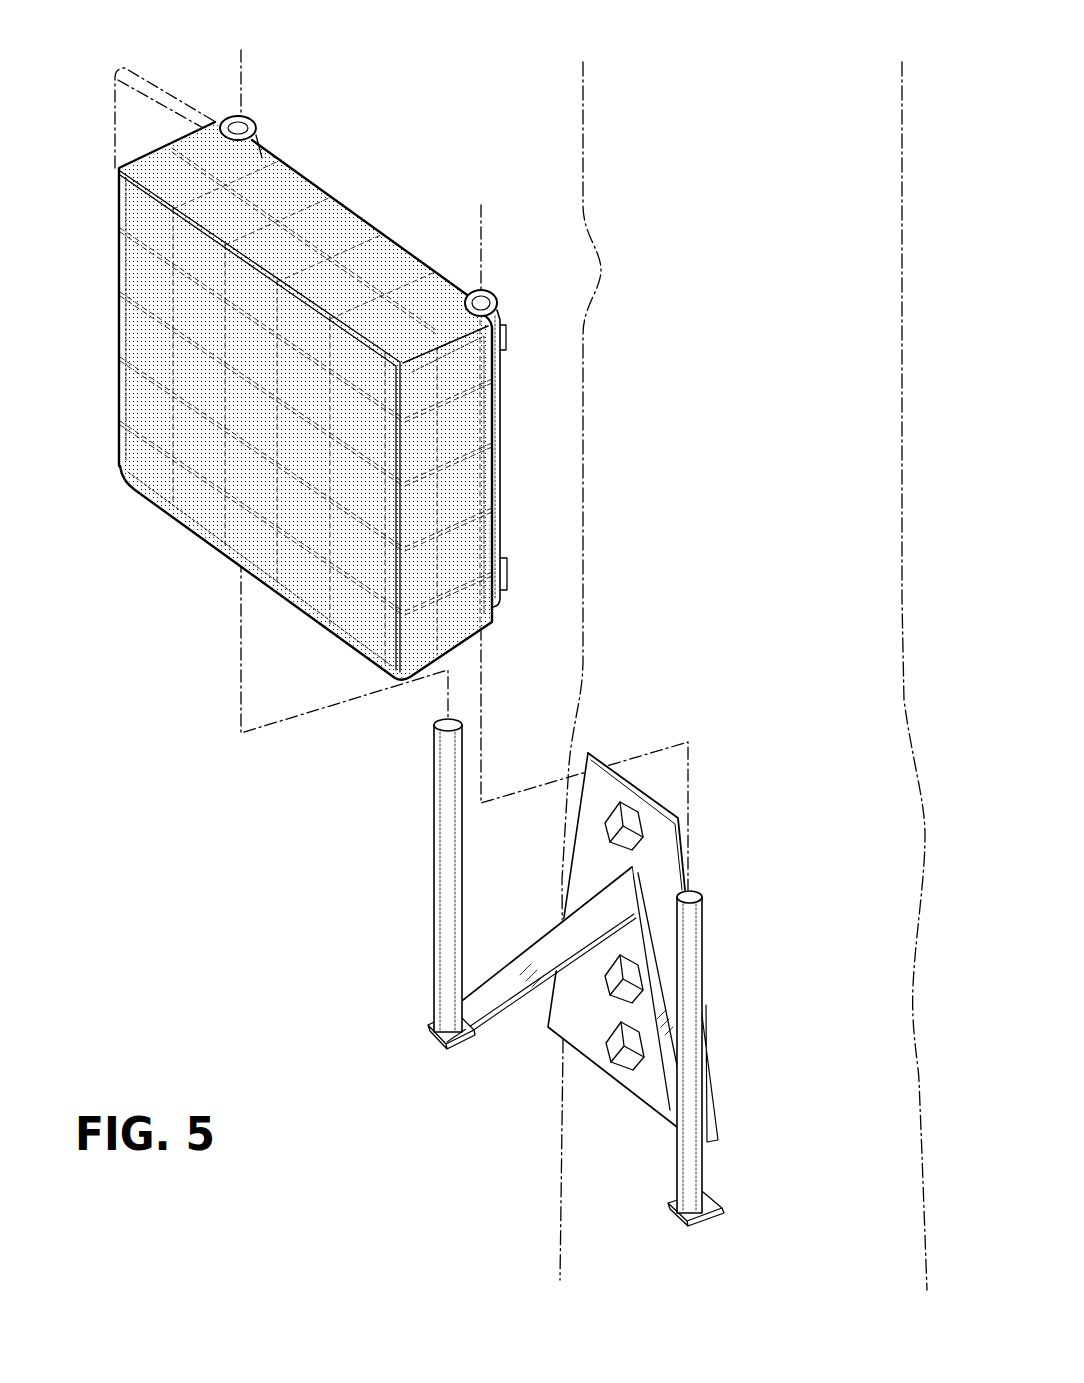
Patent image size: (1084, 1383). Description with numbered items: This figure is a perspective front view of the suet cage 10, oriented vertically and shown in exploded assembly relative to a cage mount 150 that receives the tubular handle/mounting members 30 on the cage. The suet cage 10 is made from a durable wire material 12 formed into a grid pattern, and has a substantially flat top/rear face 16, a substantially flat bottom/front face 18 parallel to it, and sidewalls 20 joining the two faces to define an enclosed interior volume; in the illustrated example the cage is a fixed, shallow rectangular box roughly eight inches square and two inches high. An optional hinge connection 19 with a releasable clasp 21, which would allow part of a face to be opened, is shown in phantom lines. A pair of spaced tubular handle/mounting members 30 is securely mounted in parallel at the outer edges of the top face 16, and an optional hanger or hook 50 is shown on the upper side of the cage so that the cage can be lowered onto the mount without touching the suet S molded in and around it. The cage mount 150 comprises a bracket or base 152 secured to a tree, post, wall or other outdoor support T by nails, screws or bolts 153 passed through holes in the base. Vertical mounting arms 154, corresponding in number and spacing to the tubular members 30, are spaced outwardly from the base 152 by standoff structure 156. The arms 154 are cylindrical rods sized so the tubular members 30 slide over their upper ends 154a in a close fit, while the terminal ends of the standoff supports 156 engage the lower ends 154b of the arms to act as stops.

The suet cage 10 is at (300, 344).
The wire material 12 is at (291, 344).
The top/rear face 16 is at (417, 270).
The bottom/front face 18 is at (200, 383).
The hinge connection 19 is at (280, 592).
The sidewalls 20 is at (210, 157).
The releasable clasp 21 is at (160, 504).
The tubular handle/mounting members 30 is at (260, 127).
The hanger or hook 50 is at (110, 123).
The melted suet S is at (370, 270).
The outdoor support T is at (907, 372).
The cage mount 150 is at (585, 993).
The bracket or base 152 is at (658, 853).
The nails, screws or bolts 153 is at (622, 838).
The vertical mounting arms 154 is at (579, 965).
The upper ends of mounting arms 154a is at (433, 717).
The lower ends of mounting arms 154b is at (448, 1035).
The standoff structure 156 is at (547, 960).